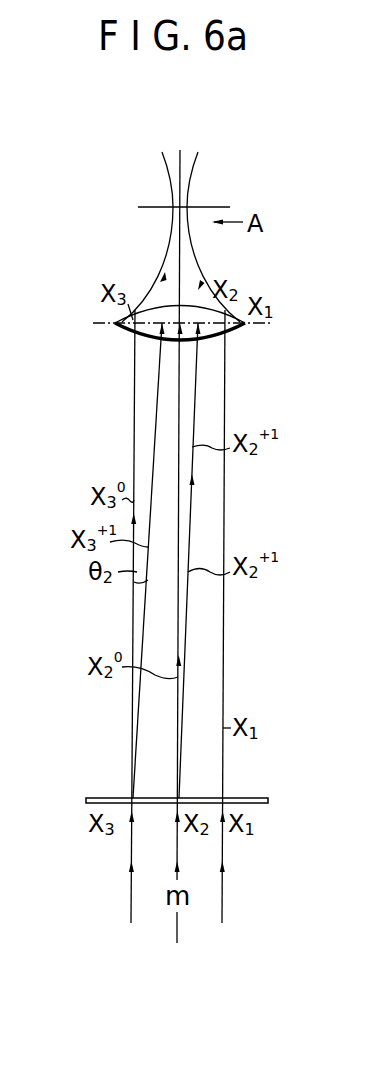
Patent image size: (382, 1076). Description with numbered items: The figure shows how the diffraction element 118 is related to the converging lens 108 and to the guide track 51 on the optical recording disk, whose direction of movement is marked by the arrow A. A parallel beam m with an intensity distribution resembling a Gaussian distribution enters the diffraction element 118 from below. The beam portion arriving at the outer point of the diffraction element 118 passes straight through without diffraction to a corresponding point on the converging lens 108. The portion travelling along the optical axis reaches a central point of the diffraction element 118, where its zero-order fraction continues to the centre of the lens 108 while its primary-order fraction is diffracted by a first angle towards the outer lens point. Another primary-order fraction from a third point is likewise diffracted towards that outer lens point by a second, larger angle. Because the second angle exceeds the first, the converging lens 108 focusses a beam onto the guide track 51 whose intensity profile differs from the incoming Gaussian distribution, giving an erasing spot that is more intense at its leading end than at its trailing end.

The guide track 51 is at (215, 207).
The converging lens 108 is at (115, 322).
The diffraction element 118 is at (101, 798).